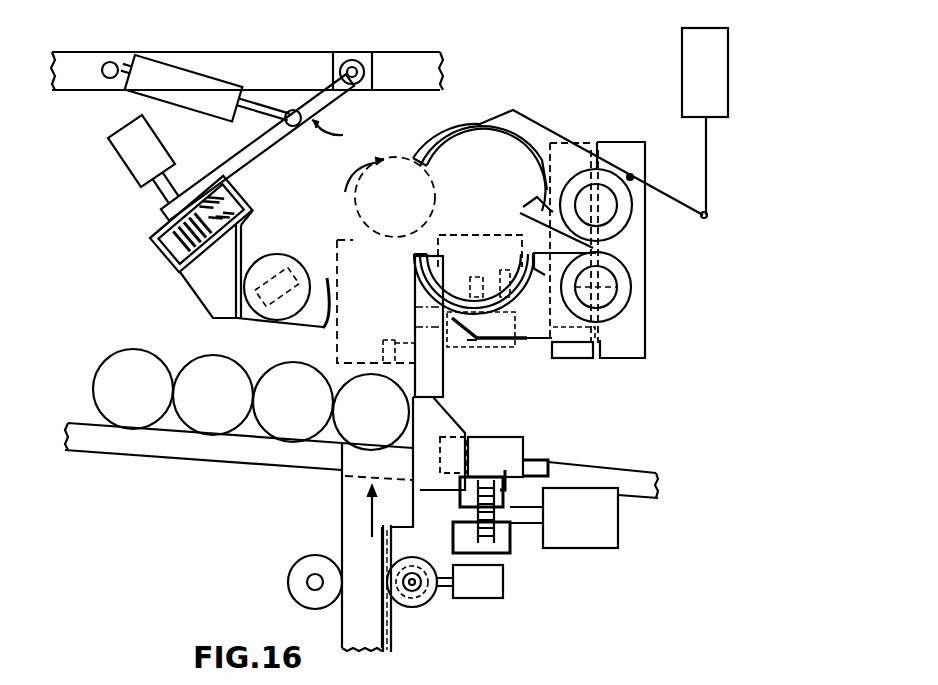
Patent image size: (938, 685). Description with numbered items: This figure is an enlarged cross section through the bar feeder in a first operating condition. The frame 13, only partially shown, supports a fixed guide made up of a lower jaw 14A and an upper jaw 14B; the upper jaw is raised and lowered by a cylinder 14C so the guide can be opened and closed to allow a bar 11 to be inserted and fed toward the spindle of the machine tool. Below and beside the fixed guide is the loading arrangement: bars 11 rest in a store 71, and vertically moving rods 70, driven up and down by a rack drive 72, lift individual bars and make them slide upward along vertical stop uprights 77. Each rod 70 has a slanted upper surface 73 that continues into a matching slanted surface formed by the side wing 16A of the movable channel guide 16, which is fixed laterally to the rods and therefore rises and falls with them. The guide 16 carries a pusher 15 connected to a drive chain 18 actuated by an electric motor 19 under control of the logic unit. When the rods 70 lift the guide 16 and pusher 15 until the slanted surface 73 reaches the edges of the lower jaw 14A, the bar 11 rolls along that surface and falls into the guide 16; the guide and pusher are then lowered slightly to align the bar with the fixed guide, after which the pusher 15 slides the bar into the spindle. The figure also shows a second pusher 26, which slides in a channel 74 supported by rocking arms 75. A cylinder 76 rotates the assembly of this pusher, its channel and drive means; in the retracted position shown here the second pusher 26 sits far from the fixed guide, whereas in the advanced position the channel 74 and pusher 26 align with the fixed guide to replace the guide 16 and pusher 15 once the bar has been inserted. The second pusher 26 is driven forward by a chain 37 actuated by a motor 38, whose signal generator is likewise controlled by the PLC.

The frame 13 is at (420, 72).
The cylinder 76 is at (180, 85).
The rocking arms 75 is at (310, 107).
The motor 38 is at (137, 157).
The chain 37 is at (157, 252).
The channel 74 is at (240, 323).
The second pusher 26 is at (257, 277).
The slanted upper surface 73 is at (413, 253).
The bar 11 is at (395, 200).
The side wing 16A is at (462, 235).
The upper jaw 14B is at (530, 138).
The cylinder 14C is at (717, 67).
The lower jaw 14A is at (527, 340).
The vertical stop uprights 77 is at (430, 362).
The rods 70 is at (352, 515).
The store 71 is at (148, 442).
The pusher 15 is at (493, 447).
The second movable guide 16 is at (540, 462).
The electric motor 19 is at (598, 520).
The drive chain 18 is at (498, 543).
The rack drive 72 is at (413, 608).